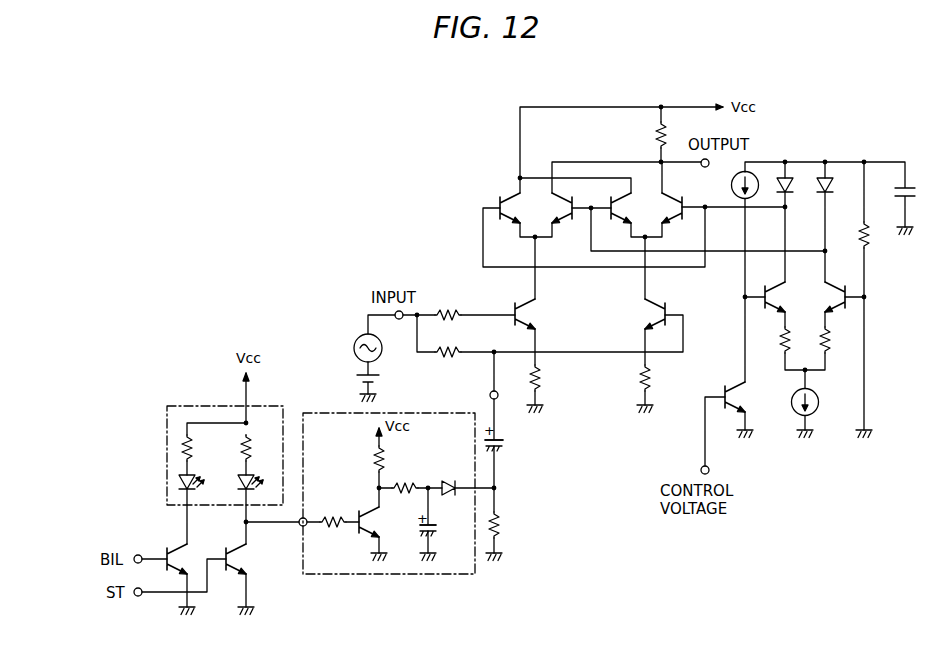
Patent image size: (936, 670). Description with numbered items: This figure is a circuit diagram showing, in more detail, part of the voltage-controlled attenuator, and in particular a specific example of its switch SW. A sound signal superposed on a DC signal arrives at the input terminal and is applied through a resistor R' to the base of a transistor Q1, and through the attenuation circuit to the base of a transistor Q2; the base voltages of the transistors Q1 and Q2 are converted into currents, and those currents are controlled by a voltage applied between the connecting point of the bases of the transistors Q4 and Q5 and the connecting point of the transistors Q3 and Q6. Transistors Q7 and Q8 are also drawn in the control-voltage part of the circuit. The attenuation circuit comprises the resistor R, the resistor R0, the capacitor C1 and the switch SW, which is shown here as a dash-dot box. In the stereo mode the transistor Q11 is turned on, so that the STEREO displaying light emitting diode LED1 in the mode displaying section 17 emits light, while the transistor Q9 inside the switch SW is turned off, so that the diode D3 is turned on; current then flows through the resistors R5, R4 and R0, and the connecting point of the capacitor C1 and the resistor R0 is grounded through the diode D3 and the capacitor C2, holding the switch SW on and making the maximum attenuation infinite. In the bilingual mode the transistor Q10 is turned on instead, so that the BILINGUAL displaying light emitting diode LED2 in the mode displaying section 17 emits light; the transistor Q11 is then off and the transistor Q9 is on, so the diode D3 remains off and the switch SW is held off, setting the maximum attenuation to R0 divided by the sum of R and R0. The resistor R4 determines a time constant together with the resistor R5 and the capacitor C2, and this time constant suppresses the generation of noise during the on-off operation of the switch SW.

The transistor Q1 is at (537, 315).
The transistor Q2 is at (657, 313).
The transistor Q3 is at (513, 198).
The transistor Q4 is at (573, 222).
The transistor Q5 is at (618, 216).
The transistor Q6 is at (674, 204).
The transistor Q7 is at (775, 302).
The transistor Q8 is at (838, 290).
The transistor Q9 is at (373, 525).
The transistor Q10 is at (182, 562).
The transistor Q11 is at (240, 560).
The resistor R is at (448, 371).
The resistor R' is at (448, 297).
The resistor R0 is at (505, 526).
The resistor R4 is at (405, 481).
The resistor R5 is at (372, 470).
The capacitor C1 is at (504, 444).
The capacitor C2 is at (435, 531).
The diode D3 is at (452, 477).
The switch SW is at (430, 574).
The mode displaying section 17 is at (203, 404).
The light emitting diode LED1 is at (252, 476).
The light emitting diode LED2 is at (178, 481).